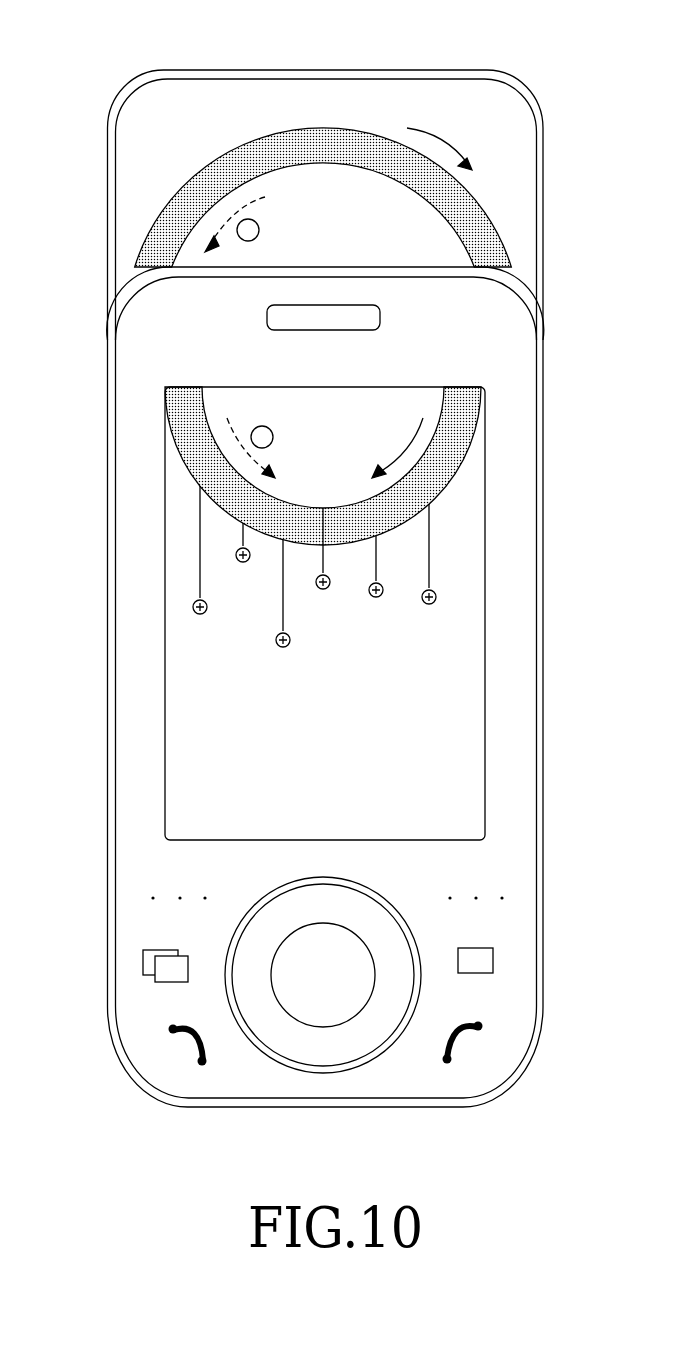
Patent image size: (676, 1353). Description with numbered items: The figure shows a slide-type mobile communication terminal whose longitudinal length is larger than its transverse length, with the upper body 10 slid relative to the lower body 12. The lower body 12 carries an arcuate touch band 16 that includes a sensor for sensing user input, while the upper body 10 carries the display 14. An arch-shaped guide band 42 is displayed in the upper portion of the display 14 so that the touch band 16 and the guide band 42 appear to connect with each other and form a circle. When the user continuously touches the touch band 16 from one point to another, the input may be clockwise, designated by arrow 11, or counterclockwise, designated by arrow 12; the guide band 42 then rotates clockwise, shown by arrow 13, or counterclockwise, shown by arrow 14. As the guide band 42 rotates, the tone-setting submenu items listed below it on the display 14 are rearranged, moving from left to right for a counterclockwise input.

The upper body 10 is at (172, 867).
The arrow 11 is at (439, 143).
The lower body 12 is at (332, 97).
The arrow 13 is at (397, 448).
The display 14 is at (185, 563).
The touch band 16 is at (215, 172).
The guide band 42 is at (193, 452).